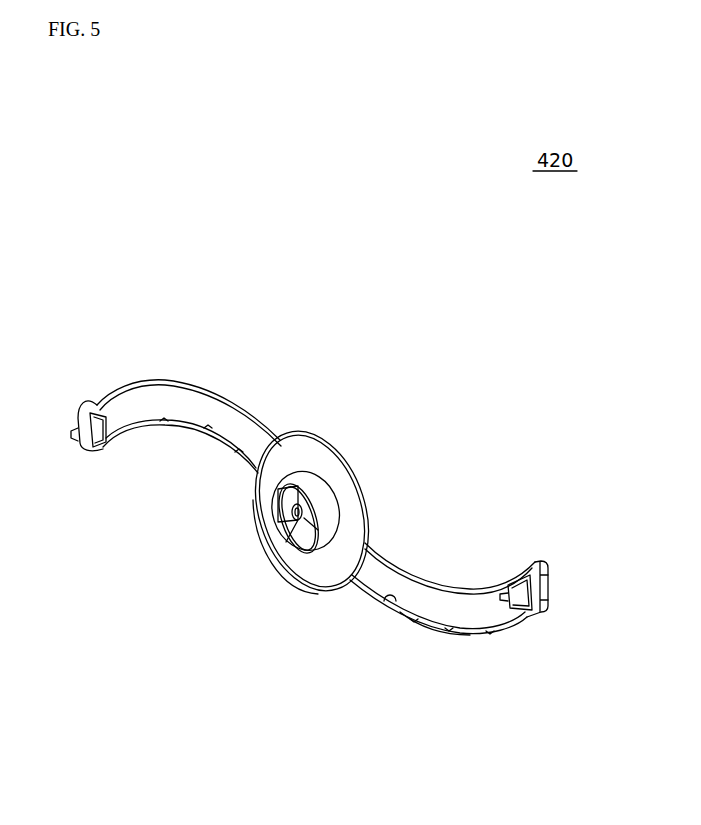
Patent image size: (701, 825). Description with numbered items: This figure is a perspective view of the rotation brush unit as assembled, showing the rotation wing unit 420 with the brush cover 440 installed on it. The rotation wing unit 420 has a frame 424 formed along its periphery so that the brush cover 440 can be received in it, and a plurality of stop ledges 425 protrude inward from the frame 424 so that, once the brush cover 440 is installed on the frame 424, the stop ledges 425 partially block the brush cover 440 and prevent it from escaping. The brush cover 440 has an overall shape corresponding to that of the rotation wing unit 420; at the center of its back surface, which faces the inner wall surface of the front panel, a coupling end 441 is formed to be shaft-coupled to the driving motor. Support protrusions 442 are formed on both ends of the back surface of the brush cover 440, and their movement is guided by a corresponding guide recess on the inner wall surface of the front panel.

The rotation wing unit 420 is at (309, 524).
The frame 424 is at (399, 565).
The stop ledges 425 is at (400, 610).
The brush cover 440 is at (443, 638).
The coupling end 441 is at (287, 542).
The support protrusions 442 is at (86, 432).